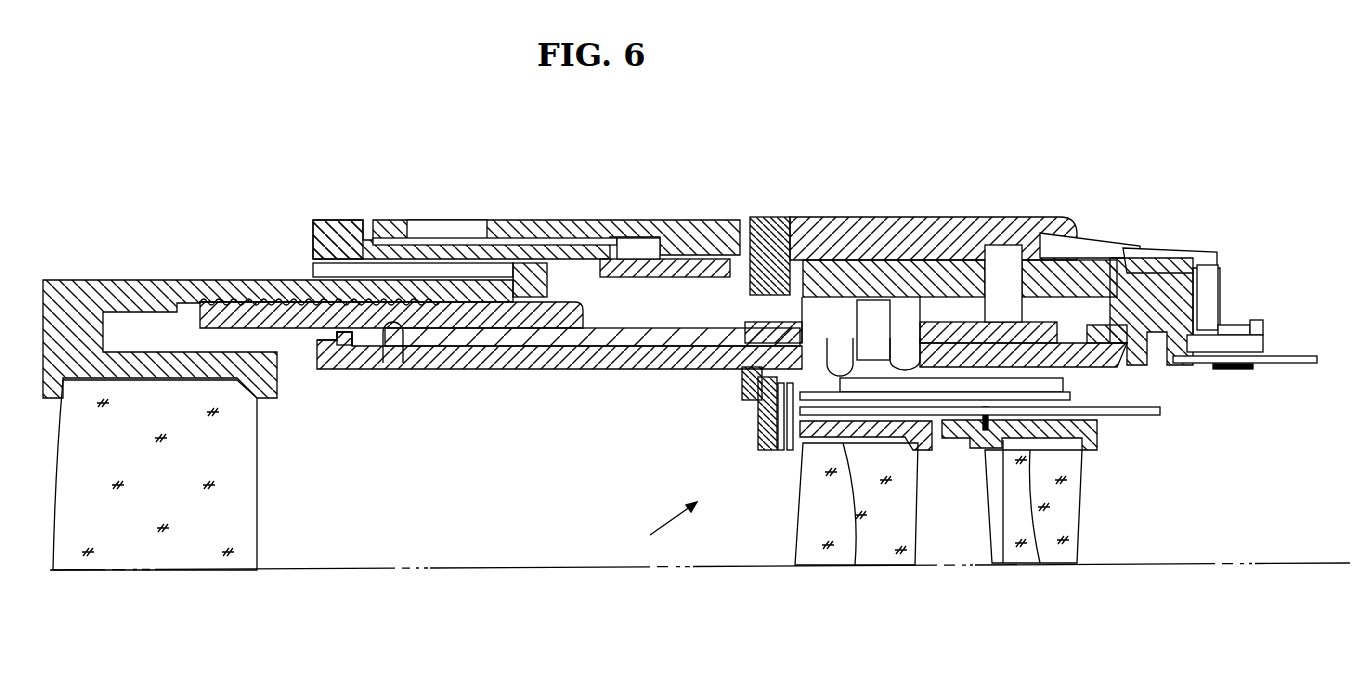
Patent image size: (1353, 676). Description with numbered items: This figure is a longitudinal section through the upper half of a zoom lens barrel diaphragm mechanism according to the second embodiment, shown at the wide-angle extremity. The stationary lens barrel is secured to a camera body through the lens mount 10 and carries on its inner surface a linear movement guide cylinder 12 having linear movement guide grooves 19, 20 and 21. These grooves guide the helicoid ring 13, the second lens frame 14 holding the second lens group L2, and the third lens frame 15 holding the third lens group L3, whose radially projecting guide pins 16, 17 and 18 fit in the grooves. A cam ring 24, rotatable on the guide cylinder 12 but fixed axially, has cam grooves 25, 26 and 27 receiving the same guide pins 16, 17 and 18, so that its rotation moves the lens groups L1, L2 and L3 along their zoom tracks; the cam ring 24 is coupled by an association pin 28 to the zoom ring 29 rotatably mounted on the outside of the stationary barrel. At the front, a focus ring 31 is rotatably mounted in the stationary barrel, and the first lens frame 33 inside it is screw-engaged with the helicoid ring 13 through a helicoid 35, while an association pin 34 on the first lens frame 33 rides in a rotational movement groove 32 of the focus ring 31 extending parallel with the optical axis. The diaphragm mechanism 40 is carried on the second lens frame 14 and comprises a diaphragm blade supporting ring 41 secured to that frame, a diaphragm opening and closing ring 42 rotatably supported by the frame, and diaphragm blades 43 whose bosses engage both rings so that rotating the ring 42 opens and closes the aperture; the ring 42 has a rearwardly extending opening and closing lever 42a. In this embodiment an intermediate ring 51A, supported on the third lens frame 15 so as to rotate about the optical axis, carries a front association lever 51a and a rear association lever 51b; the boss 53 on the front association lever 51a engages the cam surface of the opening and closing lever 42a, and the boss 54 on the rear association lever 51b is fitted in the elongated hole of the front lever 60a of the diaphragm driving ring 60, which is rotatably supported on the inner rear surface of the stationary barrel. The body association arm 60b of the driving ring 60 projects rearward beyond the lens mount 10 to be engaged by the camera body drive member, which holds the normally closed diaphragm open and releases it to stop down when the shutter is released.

The lens mount 10 is at (1210, 278).
The linear movement guide cylinder 12 is at (583, 360).
The helicoid ring 13 is at (288, 320).
The second lens frame 14 is at (820, 433).
The third lens frame 15 is at (1090, 452).
The guide pin 16 is at (362, 365).
The guide pin 17 is at (818, 340).
The guide pin 18 is at (880, 335).
The linear movement guide groove 19 is at (381, 364).
The linear movement guide groove 20 is at (845, 352).
The linear movement guide groove 21 is at (915, 345).
The cam ring 24 is at (674, 305).
The cam groove 25 is at (410, 357).
The cam groove 26 is at (804, 345).
The cam groove 27 is at (897, 335).
The association pin 28 is at (1008, 250).
The zoom ring 29 is at (960, 230).
The focus ring 31 is at (343, 227).
The rotational movement groove 32 is at (328, 265).
The first lens frame 33 is at (125, 290).
The association pin 34 is at (530, 265).
The helicoid 35 is at (248, 302).
The diaphragm mechanism 40 is at (658, 531).
The diaphragm blade supporting ring 41 is at (757, 425).
The diaphragm opening and closing ring 42 is at (789, 450).
The opening and closing lever 42a is at (1103, 412).
The diaphragm blades 43 is at (780, 450).
The front association lever 51a is at (855, 565).
The intermediate ring 51A is at (1000, 565).
The rear association lever 51b is at (1160, 416).
The boss 53 is at (742, 392).
The boss 54 is at (1157, 393).
The diaphragm driving ring 60 is at (1220, 322).
The front lever 60a is at (1290, 348).
The body association arm 60b is at (1040, 565).
The first lens group L1 is at (128, 547).
The second lens group L2 is at (878, 550).
The third lens group L3 is at (1063, 553).